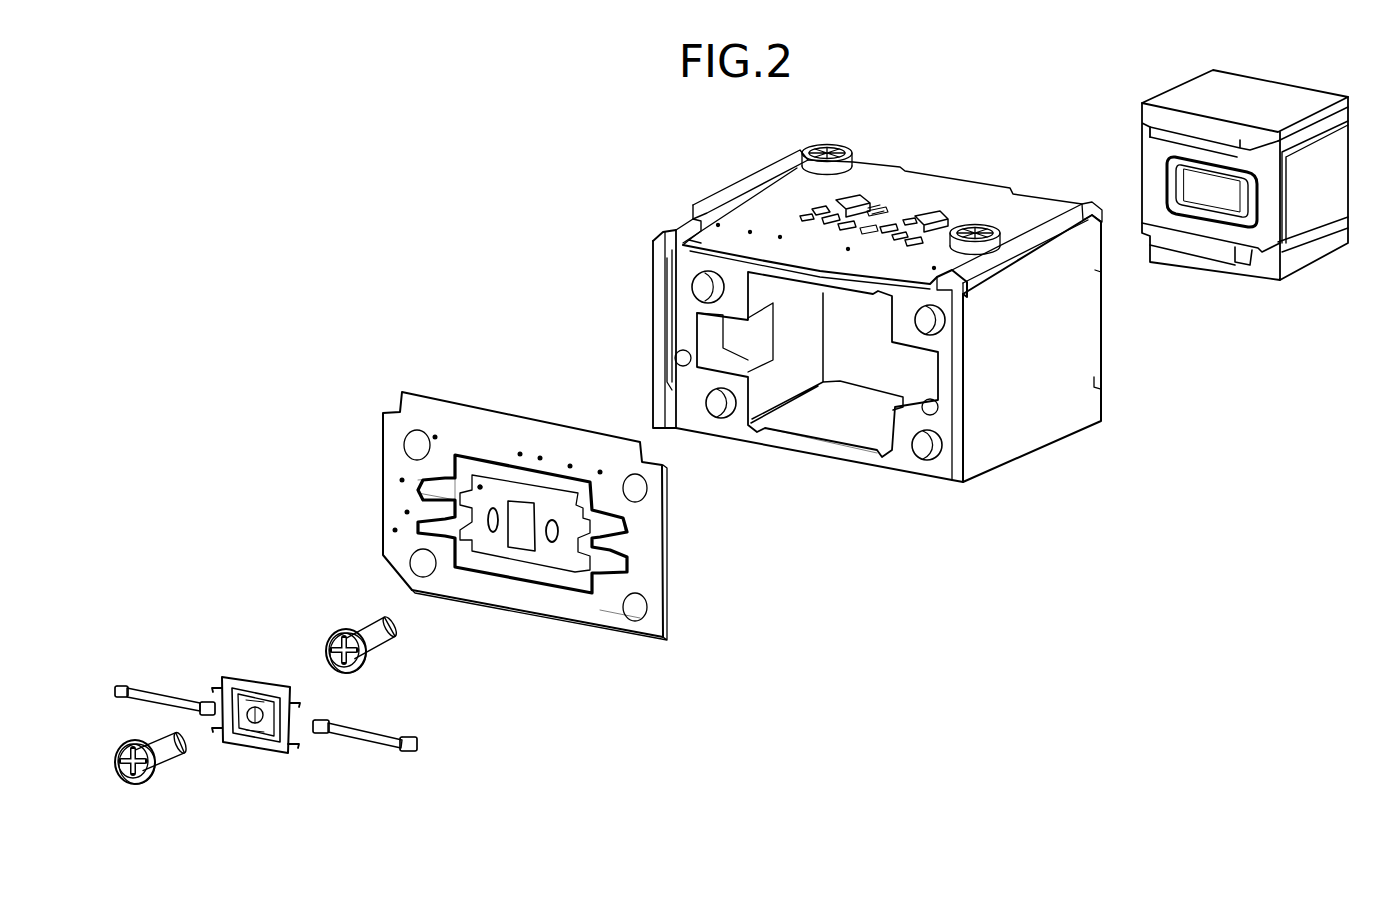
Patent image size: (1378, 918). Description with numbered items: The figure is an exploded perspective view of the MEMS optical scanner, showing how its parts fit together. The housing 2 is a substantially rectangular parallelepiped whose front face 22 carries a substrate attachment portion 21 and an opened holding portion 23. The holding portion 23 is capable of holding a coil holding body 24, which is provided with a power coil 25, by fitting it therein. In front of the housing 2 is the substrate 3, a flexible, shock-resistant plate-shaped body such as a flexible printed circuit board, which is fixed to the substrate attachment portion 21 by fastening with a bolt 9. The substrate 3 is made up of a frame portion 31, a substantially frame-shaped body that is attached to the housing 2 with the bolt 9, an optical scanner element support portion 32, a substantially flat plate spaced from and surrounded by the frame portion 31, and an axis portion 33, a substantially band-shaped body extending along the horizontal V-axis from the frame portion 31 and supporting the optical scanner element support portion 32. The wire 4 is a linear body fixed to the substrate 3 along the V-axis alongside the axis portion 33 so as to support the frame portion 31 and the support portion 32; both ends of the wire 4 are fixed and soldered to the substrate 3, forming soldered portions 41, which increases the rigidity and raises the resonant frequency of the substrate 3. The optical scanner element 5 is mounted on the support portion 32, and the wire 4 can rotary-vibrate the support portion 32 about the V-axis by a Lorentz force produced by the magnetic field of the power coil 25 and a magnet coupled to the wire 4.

The housing 2 is at (1088, 397).
The substrate attachment portion 21 is at (946, 323).
The front face 22 is at (687, 305).
The holding portion 23 is at (830, 422).
The coil holding body 24 is at (1250, 266).
The power coil 25 is at (1170, 170).
The substrate 3 is at (660, 622).
The frame portion 31 is at (608, 612).
The optical scanner element support portion 32 is at (557, 562).
The axis portion 33 is at (440, 502).
The wire 4 is at (126, 685).
The soldered portions 41 is at (114, 690).
The optical scanner element 5 is at (260, 677).
The bolt 9 is at (380, 642).